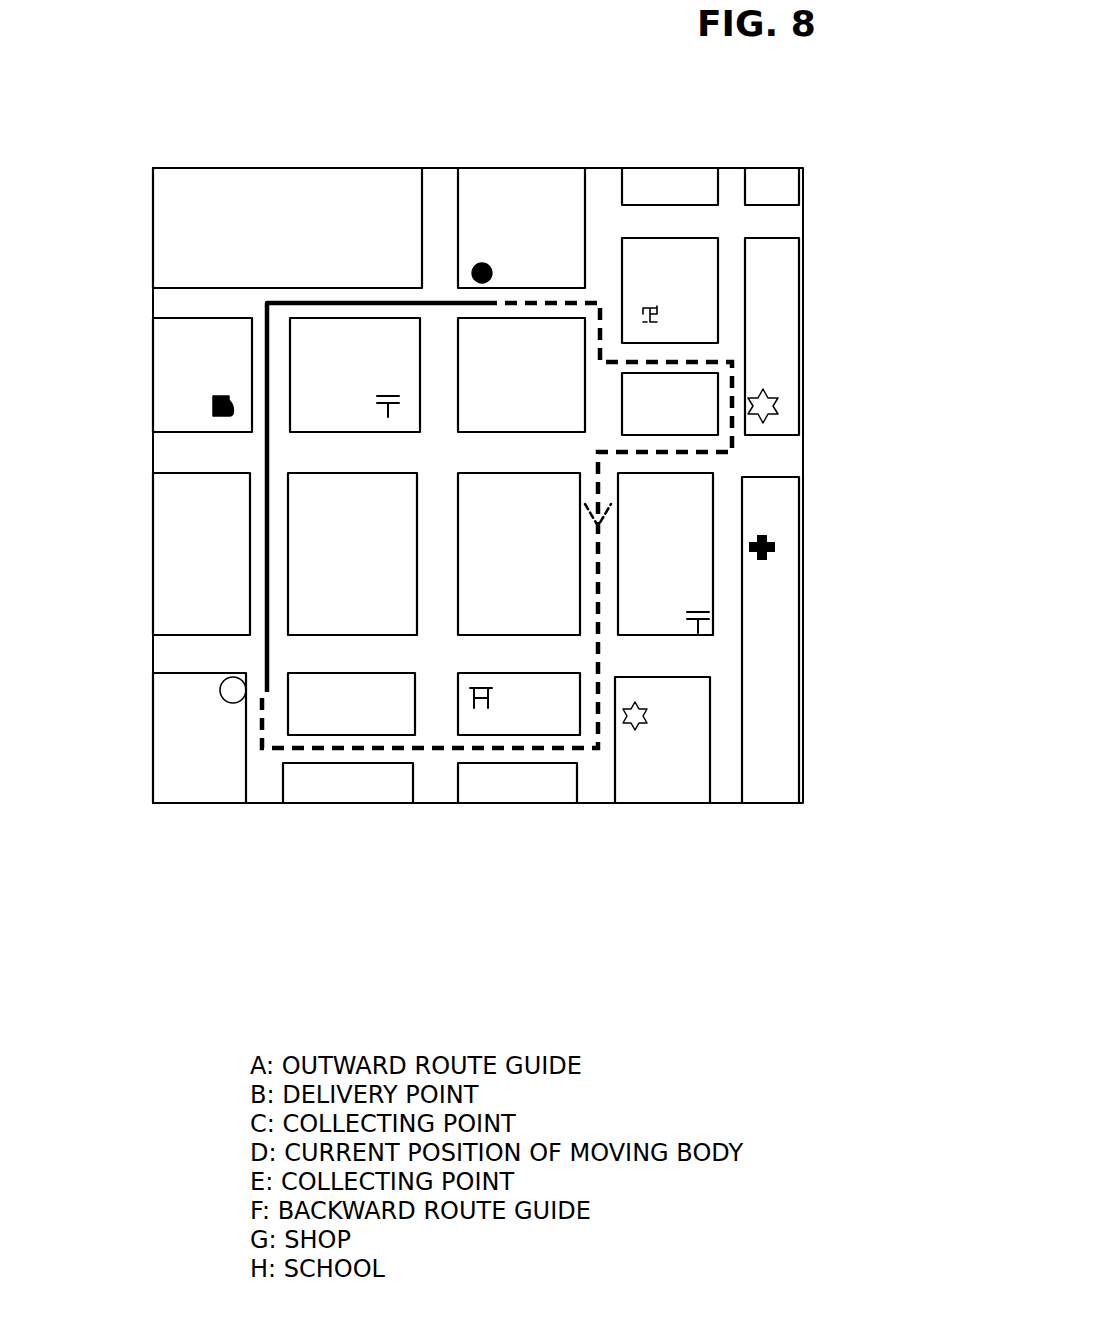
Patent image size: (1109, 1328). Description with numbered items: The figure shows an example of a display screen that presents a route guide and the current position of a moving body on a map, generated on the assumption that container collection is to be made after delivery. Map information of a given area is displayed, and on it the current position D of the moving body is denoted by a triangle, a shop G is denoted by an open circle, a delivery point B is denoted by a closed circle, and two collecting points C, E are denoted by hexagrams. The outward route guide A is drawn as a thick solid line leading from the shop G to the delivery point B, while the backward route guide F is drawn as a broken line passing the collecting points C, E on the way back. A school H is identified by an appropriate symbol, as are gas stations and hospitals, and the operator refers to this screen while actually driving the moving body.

The outward route guide A is at (376, 368).
The delivery point B is at (532, 162).
The collecting point C is at (845, 353).
The current position of moving body D is at (762, 557).
The collecting point E is at (672, 827).
The backward route guide F is at (497, 663).
The shop G is at (204, 829).
The school H is at (143, 247).